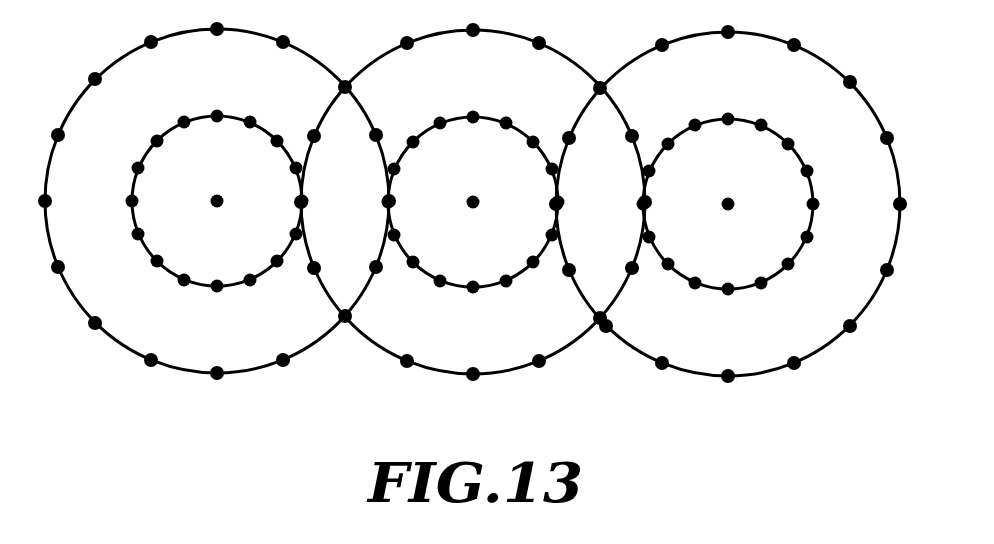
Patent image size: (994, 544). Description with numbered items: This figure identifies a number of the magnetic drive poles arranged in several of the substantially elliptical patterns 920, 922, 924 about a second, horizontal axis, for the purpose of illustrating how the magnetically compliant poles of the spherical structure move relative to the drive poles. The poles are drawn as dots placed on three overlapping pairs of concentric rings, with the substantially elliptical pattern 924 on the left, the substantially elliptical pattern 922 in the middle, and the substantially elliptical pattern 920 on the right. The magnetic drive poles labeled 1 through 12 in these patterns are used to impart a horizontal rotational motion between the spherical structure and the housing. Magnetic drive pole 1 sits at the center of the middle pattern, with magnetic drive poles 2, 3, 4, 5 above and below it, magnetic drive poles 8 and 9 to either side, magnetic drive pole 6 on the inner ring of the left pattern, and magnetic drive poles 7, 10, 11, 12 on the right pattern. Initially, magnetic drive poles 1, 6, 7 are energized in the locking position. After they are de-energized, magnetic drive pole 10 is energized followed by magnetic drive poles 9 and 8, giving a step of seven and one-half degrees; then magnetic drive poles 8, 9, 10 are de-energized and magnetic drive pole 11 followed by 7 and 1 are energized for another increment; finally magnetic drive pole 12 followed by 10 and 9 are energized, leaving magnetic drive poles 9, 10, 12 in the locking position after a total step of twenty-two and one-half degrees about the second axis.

The magnetic drive pole 1 is at (477, 191).
The magnetic drive pole 2 is at (477, 104).
The magnetic drive pole 3 is at (477, 18).
The magnetic drive pole 4 is at (476, 275).
The magnetic drive pole 5 is at (475, 362).
The magnetic drive pole 6 is at (310, 202).
The magnetic drive pole 7 is at (634, 202).
The magnetic drive pole 8 is at (377, 202).
The magnetic drive pole 9 is at (549, 202).
The magnetic drive pole 10 is at (743, 202).
The magnetic drive pole 11 is at (827, 202).
The magnetic drive pole 12 is at (886, 202).
The substantially elliptical pattern 920 is at (773, 375).
The substantially elliptical pattern 922 is at (510, 375).
The substantially elliptical pattern 924 is at (119, 346).